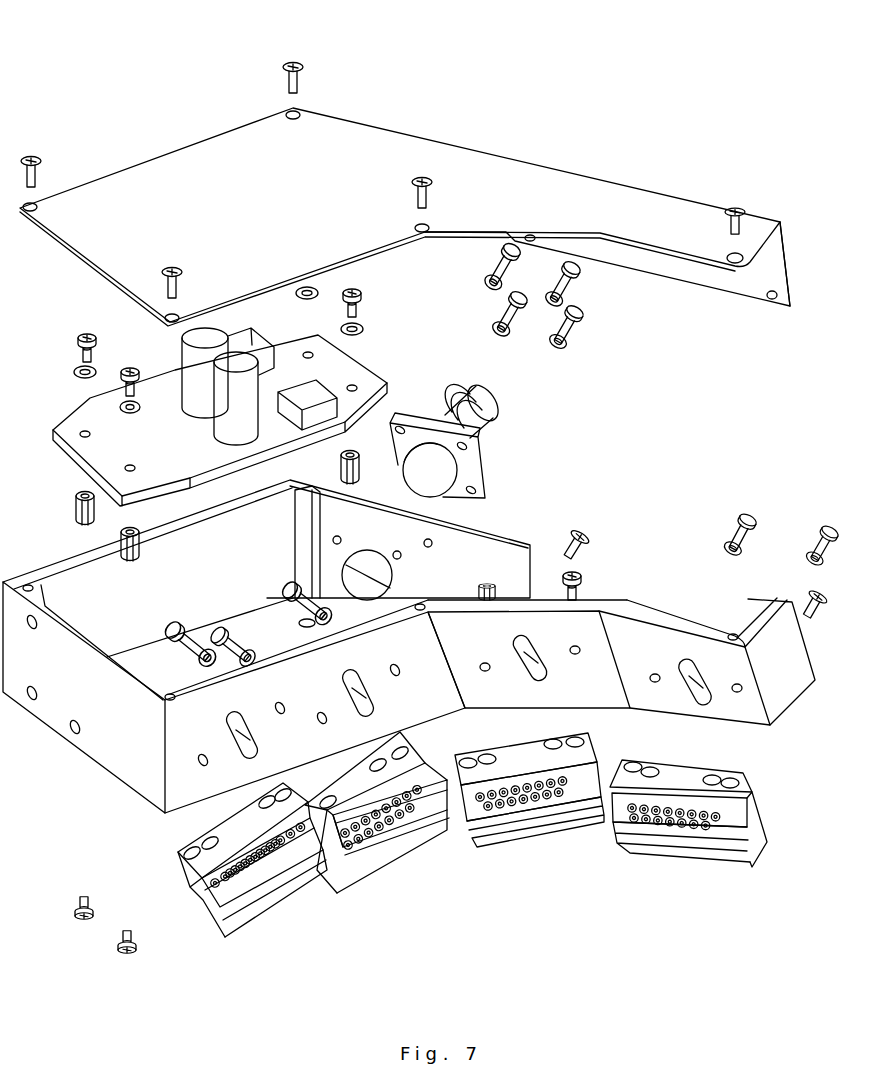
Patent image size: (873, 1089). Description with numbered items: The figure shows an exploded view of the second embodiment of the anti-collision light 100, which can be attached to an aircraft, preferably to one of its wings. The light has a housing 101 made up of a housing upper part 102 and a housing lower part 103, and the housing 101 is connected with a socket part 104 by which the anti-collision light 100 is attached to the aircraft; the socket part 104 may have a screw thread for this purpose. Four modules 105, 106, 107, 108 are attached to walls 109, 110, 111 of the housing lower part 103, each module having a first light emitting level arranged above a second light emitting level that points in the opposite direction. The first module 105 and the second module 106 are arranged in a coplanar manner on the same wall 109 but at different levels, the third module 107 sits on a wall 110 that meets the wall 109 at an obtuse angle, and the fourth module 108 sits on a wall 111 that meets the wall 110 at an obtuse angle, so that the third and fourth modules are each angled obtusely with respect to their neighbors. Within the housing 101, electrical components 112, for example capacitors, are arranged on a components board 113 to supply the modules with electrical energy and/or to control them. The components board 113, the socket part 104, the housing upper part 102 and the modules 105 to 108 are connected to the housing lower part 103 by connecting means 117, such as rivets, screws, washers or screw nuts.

The anti-collision light 100 is at (740, 132).
The housing 101 is at (409, 475).
The housing upper part 102 is at (333, 217).
The housing lower part 103 is at (105, 768).
The socket part 104 is at (483, 425).
The first module 105 is at (275, 900).
The second module 106 is at (405, 858).
The third module 107 is at (555, 835).
The fourth module 108 is at (690, 858).
The wall 109 is at (323, 697).
The wall 110 is at (498, 645).
The wall 111 is at (663, 658).
The electrical components 112 is at (182, 352).
The components board 113 is at (181, 449).
The connecting means 117 is at (31, 160).